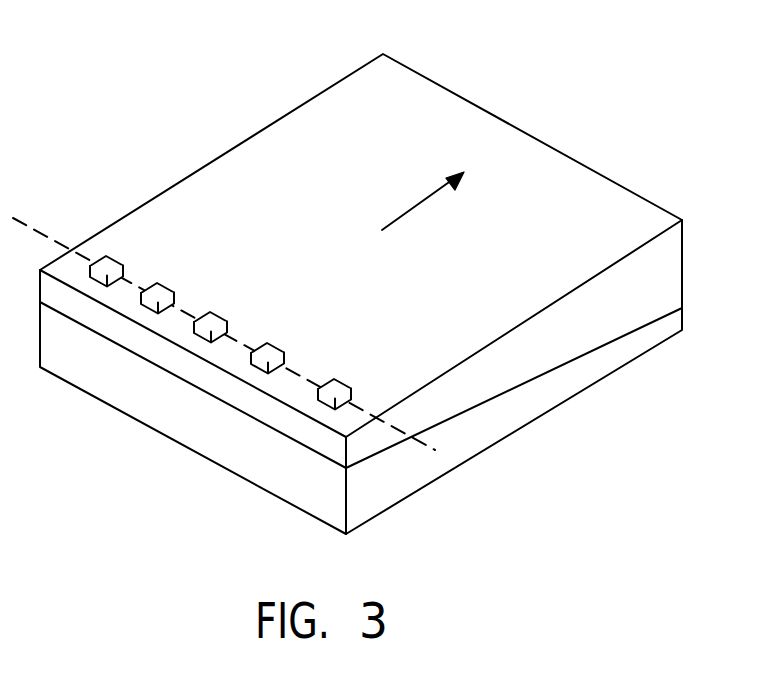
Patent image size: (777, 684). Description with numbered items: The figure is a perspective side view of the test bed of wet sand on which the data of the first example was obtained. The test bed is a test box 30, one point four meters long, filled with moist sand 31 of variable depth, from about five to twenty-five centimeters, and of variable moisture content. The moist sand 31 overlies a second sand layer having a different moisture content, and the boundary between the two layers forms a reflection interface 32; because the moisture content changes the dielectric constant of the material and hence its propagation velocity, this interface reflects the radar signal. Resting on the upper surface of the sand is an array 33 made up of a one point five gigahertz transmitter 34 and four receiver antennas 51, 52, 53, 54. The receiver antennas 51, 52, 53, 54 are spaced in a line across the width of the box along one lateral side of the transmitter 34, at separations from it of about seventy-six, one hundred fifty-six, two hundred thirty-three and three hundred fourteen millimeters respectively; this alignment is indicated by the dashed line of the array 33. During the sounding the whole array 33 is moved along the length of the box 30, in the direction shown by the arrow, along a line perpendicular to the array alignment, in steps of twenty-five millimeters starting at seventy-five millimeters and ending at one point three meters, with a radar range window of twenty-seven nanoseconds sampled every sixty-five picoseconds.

The test box 30 is at (235, 140).
The moist sand 31 is at (667, 277).
The reflection interface 32 is at (553, 369).
The array 33 is at (33, 226).
The transmitter 34 is at (111, 257).
The receiver antenna S1 51 is at (169, 284).
The receiver antenna S2 52 is at (221, 315).
The receiver antenna S3 53 is at (278, 347).
The receiver antenna S4 54 is at (343, 382).